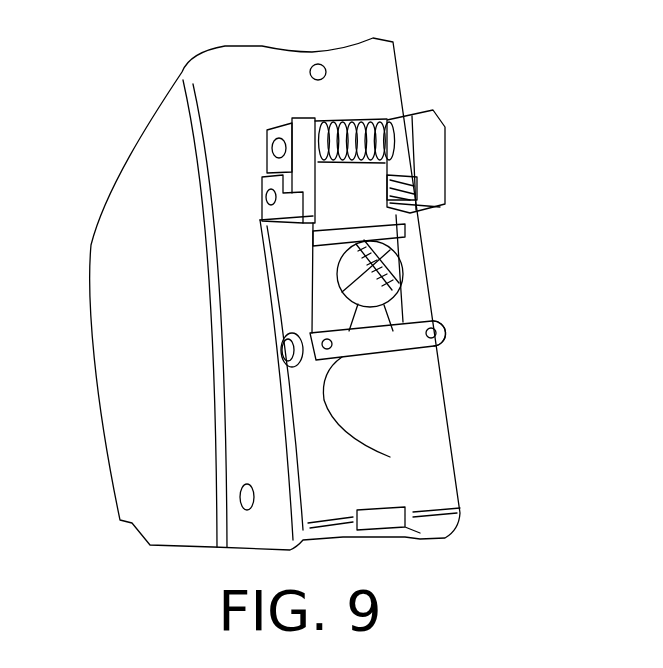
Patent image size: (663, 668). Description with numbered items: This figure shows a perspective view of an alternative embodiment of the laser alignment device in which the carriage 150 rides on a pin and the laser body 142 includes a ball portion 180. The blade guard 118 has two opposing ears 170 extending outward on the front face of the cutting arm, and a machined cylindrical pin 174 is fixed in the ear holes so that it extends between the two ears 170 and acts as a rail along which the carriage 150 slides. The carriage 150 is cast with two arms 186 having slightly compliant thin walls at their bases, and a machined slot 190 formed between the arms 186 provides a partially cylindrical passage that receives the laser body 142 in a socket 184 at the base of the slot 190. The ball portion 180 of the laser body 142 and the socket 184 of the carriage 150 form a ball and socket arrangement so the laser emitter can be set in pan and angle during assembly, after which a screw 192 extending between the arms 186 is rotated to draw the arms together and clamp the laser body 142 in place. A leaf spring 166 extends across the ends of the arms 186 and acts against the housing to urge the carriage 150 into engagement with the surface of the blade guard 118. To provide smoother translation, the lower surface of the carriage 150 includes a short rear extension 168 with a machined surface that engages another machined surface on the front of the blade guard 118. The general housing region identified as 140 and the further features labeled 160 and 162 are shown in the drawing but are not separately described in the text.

The blade guard 118 is at (262, 77).
The housing 140 is at (243, 372).
The laser body 142 is at (387, 259).
The carriage 150 is at (290, 290).
The block 160 is at (440, 114).
The spring 162 is at (400, 135).
The leaf spring 166 is at (381, 420).
The rear extension 168 is at (282, 366).
The ears 170 is at (265, 177).
The pin 174 is at (407, 177).
The ball portion 180 is at (393, 304).
The socket 184 is at (340, 298).
The arms 186 is at (430, 315).
The slot 190 is at (357, 372).
The screw 192 is at (330, 350).